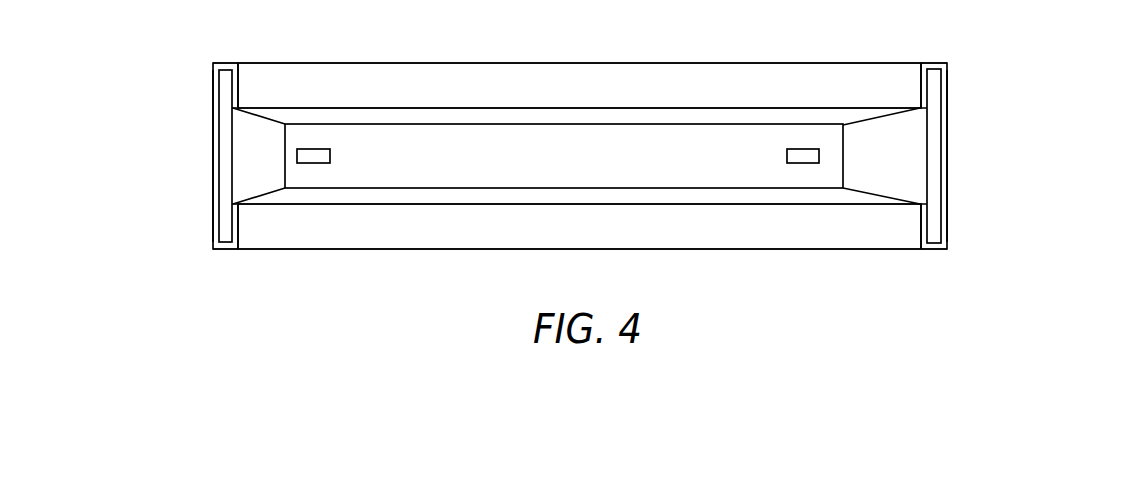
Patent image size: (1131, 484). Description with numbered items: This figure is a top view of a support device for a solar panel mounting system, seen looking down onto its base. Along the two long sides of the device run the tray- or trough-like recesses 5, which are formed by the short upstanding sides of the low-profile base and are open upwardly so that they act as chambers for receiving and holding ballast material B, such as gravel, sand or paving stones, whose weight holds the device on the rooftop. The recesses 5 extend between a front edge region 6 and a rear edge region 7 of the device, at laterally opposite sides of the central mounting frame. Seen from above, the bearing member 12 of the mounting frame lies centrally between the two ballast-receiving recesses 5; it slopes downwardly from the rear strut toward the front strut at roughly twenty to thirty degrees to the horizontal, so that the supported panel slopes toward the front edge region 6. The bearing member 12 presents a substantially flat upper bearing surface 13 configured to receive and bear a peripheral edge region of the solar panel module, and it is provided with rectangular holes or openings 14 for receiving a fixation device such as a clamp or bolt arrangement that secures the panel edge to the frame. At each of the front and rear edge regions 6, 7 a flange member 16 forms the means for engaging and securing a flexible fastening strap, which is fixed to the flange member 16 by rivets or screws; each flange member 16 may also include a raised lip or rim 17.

The tray- or trough-like recess 5 is at (600, 223).
The front edge region 6 is at (193, 98).
The rear edge region 7 is at (962, 145).
The bearing member 12 is at (397, 183).
The upper bearing surface 13 is at (675, 155).
The rectangular hole or opening 14 is at (330, 156).
The flange member 16 is at (225, 223).
The raised lip or rim 17 is at (220, 155).
The ballast material B is at (378, 82).